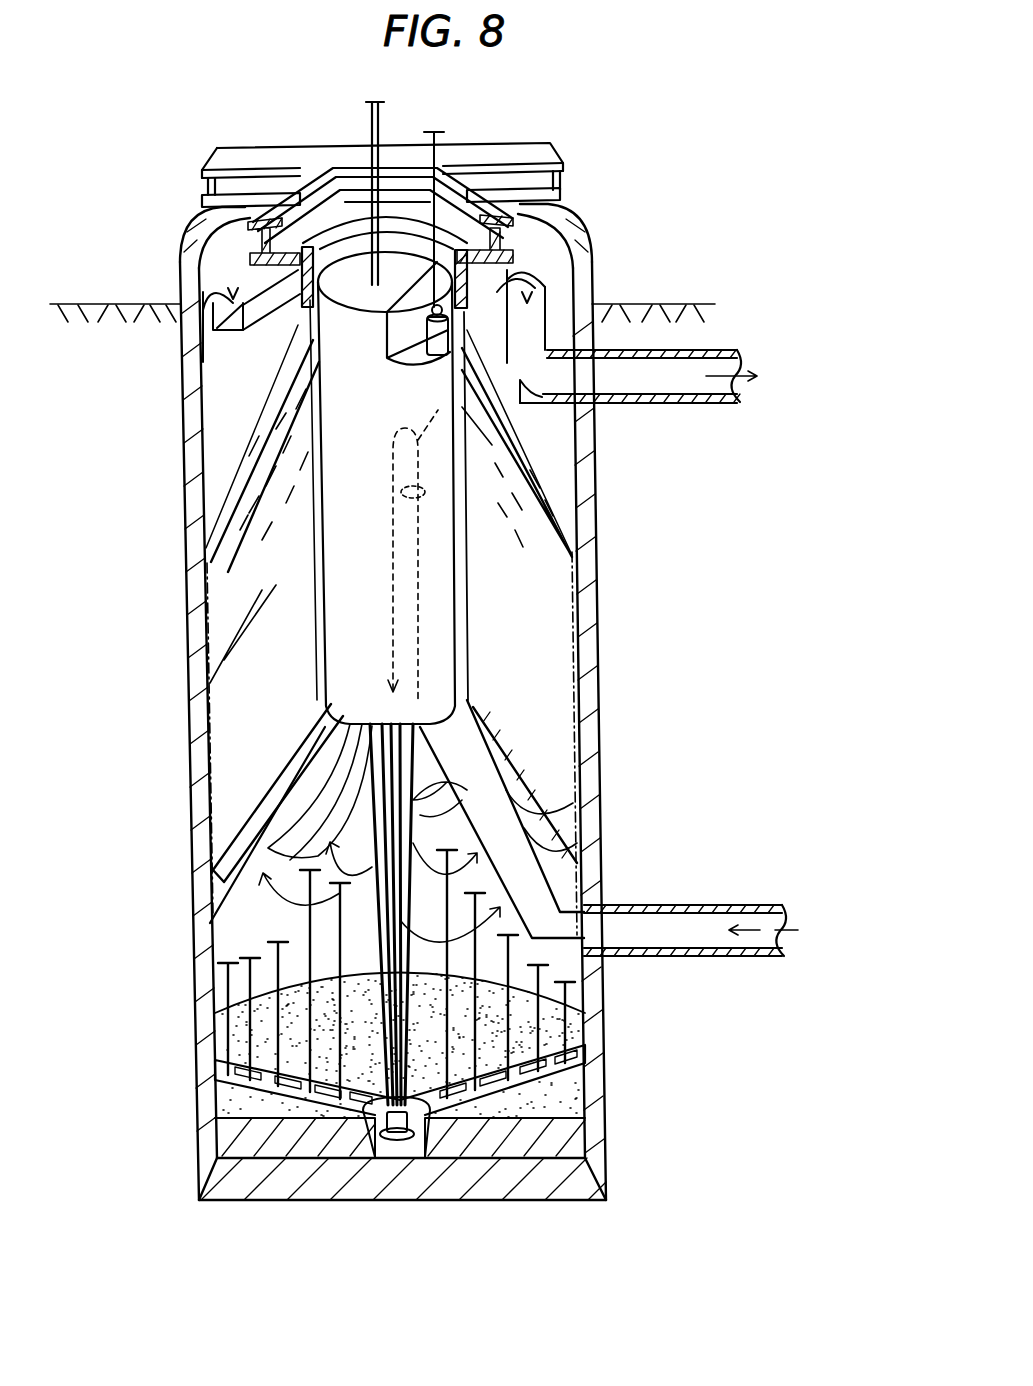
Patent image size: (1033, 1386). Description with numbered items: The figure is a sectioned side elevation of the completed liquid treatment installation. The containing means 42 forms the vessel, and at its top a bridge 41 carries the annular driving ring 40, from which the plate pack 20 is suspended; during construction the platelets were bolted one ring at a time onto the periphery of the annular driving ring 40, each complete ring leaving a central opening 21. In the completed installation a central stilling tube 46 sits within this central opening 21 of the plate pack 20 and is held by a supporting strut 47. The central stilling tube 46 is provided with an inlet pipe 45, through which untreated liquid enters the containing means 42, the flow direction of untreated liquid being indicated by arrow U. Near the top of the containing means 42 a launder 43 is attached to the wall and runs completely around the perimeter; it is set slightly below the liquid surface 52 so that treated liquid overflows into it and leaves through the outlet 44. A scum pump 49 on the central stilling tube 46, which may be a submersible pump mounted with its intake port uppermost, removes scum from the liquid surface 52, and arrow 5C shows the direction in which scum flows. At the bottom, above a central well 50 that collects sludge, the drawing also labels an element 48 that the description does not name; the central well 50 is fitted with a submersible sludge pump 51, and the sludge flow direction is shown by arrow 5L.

The annular driving ring 40 is at (398, 228).
The bridge 41 is at (313, 170).
The containing means 42 is at (220, 363).
The launder 43 is at (537, 312).
The outlet 44 is at (688, 388).
The inlet pipe 45 is at (728, 958).
The central stilling tube 46 is at (312, 428).
The supporting strut 47 is at (222, 897).
The perforated plate 48 is at (588, 1083).
The scum pump 49 is at (458, 348).
The central well 50 is at (590, 1137).
The submersible sludge pump 51 is at (400, 1143).
The liquid surface 52 is at (186, 246).
The arrow indicating scum flow direction 5C is at (312, 514).
The arrow indicating sludge flow direction 5L is at (224, 664).
The plate pack 20 is at (595, 762).
The opening 21 is at (447, 573).
The arrow indicating untreated liquid flow direction U is at (403, 437).